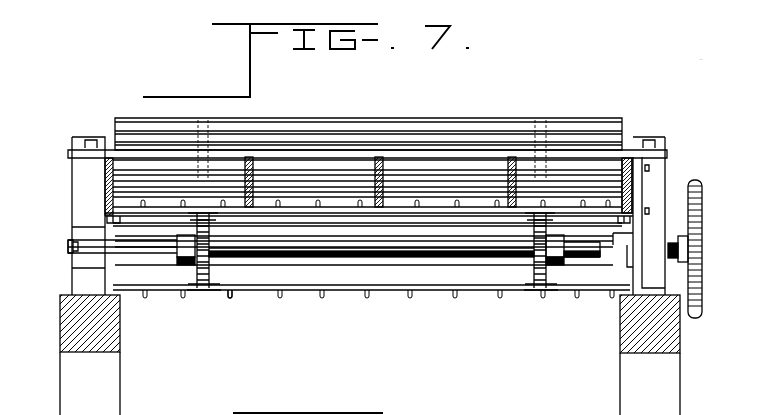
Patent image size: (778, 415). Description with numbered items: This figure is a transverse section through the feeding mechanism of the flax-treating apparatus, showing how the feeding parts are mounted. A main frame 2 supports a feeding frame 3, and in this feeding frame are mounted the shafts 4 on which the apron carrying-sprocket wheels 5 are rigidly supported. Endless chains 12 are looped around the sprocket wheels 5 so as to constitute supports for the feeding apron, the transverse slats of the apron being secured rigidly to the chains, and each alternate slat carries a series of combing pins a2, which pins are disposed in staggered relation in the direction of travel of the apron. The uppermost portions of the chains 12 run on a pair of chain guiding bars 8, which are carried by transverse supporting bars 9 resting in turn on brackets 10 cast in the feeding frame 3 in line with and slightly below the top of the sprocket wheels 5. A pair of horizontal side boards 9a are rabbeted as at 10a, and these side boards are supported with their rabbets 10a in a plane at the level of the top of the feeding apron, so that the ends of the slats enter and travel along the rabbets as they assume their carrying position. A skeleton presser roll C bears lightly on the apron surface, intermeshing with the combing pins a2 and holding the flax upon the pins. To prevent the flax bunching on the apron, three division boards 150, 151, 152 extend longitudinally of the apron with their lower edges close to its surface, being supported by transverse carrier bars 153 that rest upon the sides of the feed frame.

The main frame 2 is at (60, 310).
The feeding frame 3 is at (80, 210).
The shaft 4 is at (358, 291).
The apron carrying-sprocket wheel 5 is at (196, 288).
The chain guiding bar 8 is at (185, 222).
The transverse supporting bar 9 is at (318, 226).
The horizontal side board 9a is at (105, 178).
The bracket 10 is at (110, 250).
The rabbet 10a is at (72, 248).
The endless chain 12 is at (212, 216).
The division board 150 is at (252, 152).
The division board 151 is at (377, 152).
The division board 152 is at (516, 152).
The transverse carrier bar 153 is at (628, 155).
The skeleton presser roll C is at (400, 140).
The combing pin a2 is at (232, 292).